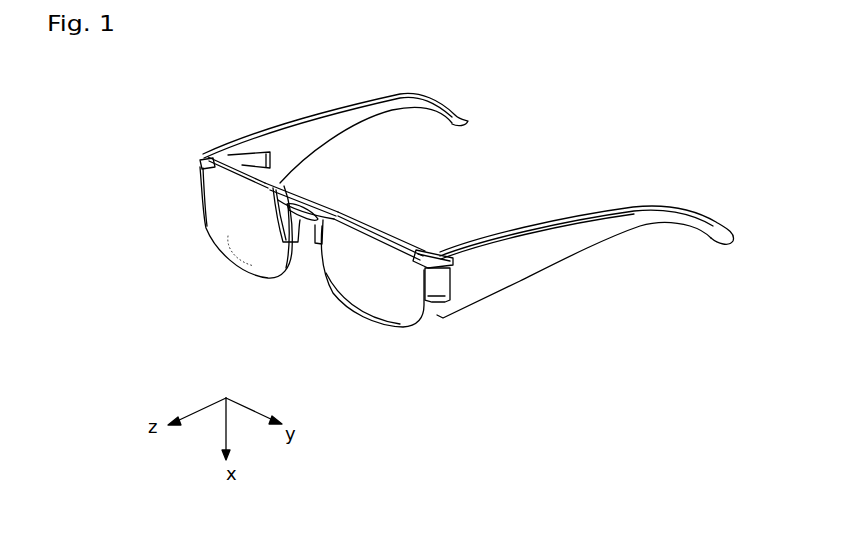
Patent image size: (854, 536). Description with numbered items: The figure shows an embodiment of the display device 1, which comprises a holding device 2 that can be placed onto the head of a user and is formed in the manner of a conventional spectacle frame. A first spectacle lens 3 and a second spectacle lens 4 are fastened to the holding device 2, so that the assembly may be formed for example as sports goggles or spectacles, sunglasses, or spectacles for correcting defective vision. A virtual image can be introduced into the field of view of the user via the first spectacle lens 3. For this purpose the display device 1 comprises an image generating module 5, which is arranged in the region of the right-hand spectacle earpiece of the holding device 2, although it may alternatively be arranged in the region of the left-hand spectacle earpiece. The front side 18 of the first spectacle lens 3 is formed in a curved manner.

The display device 1 is at (444, 198).
The holding device 2 is at (357, 102).
The first spectacle lens 3 is at (252, 271).
The second spectacle lens 4 is at (350, 325).
The image generating module 5 is at (252, 155).
The front side 18 is at (228, 235).